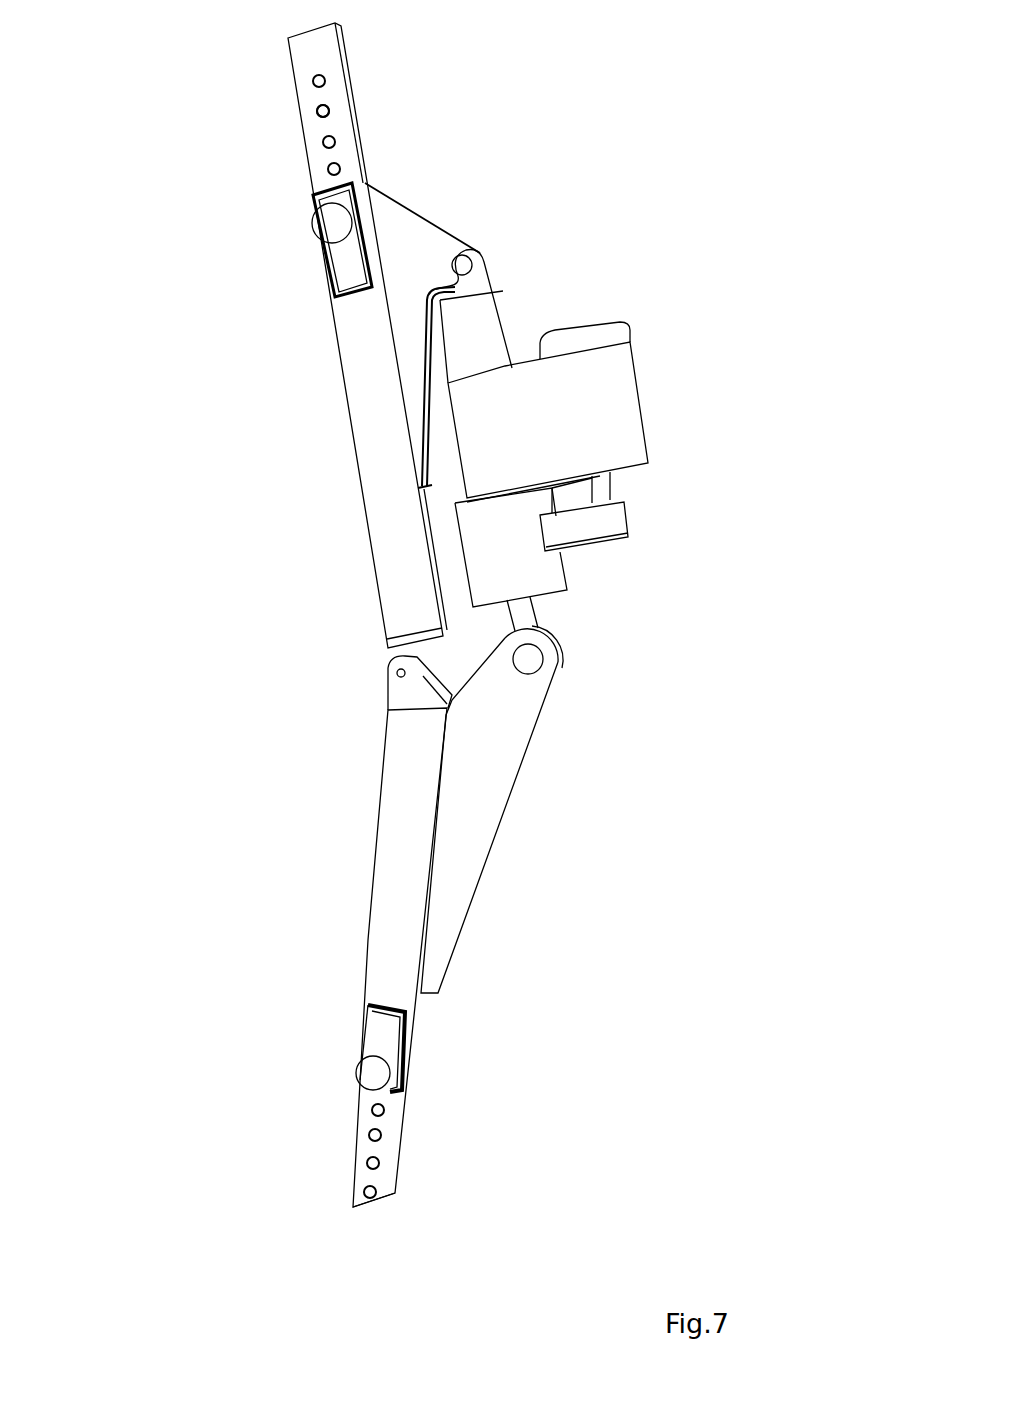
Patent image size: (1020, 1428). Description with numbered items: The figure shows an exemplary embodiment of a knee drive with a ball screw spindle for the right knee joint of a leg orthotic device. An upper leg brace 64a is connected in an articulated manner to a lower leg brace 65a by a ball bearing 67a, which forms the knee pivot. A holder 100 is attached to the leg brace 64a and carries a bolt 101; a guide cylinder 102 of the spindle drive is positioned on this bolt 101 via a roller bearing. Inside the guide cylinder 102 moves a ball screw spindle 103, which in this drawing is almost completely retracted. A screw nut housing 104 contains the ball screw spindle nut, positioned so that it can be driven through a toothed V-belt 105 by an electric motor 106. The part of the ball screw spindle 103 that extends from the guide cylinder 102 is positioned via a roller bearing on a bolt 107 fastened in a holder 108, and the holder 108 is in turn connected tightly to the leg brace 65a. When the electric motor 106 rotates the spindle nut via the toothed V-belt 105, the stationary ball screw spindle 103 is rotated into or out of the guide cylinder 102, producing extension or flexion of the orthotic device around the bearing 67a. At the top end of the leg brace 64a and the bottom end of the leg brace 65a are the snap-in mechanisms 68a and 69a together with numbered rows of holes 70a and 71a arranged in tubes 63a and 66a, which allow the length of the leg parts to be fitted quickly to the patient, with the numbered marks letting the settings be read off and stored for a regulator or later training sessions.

The tube 63a is at (305, 58).
The row of holes 70a is at (322, 112).
The snap-in mechanism 68a is at (325, 225).
The leg brace 64a is at (360, 397).
The holder 100 is at (400, 227).
The bolt 101 is at (465, 262).
The guide cylinder 102 is at (488, 325).
The electric motor 106 is at (618, 327).
The toothed V-belt 105 is at (615, 522).
The screw nut housing 104 is at (548, 577).
The ball screw spindle 103 is at (525, 618).
The bolt 107 is at (532, 662).
The holder 108 is at (475, 843).
The ball bearing 67a is at (397, 674).
The leg brace 65a is at (392, 895).
The snap-in mechanism 69a is at (368, 1074).
The row of holes 71a is at (373, 1135).
The tube 66a is at (362, 1205).